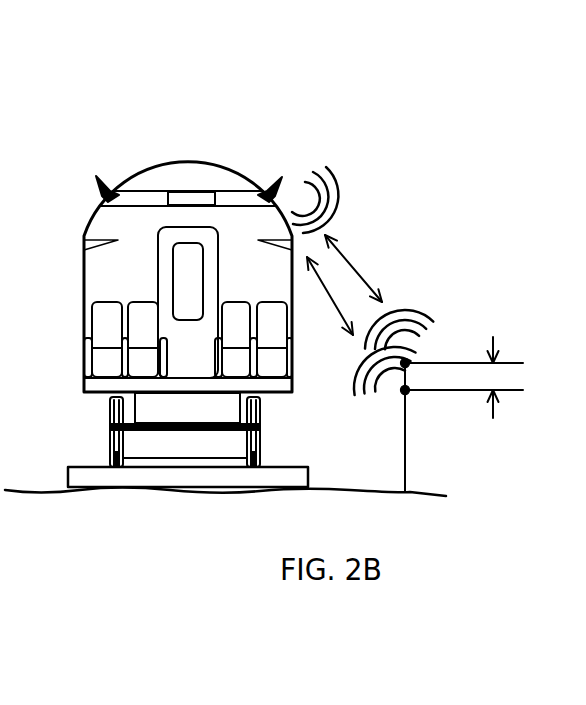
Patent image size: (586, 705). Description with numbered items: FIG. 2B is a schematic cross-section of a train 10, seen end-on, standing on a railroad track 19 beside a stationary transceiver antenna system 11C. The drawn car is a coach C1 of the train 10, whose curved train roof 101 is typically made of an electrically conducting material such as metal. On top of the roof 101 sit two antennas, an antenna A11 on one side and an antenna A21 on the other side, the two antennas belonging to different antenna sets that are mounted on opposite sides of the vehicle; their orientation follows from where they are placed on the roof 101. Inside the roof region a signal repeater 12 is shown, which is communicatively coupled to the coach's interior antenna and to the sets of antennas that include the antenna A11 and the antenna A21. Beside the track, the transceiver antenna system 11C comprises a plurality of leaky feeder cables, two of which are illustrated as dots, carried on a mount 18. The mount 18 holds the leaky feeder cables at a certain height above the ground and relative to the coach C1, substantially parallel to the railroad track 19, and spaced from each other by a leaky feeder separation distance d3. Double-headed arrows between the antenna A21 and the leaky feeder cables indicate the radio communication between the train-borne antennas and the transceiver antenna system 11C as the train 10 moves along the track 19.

The train 10 is at (218, 41).
The train roof 101 is at (143, 170).
The signal repeater 12 is at (185, 191).
The antenna A11 is at (100, 198).
The antenna A21 is at (270, 181).
The coach C1 is at (82, 283).
The railroad track 19 is at (258, 456).
The transceiver antenna system 11C is at (415, 377).
The leaky feeder separation distance d3 is at (464, 387).
The mount 18 is at (405, 458).